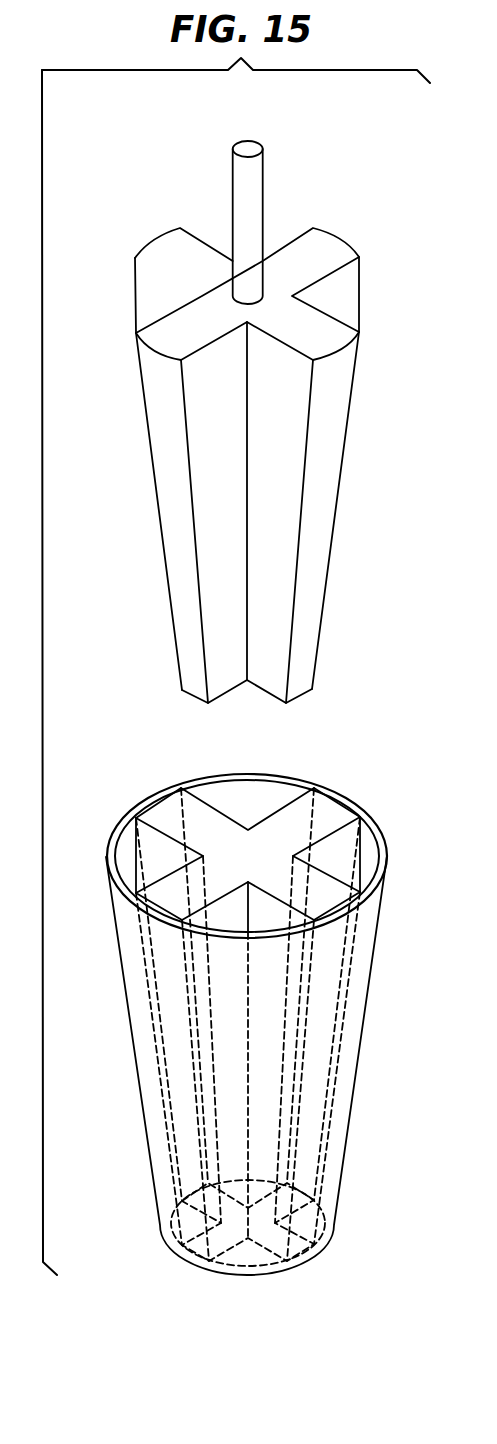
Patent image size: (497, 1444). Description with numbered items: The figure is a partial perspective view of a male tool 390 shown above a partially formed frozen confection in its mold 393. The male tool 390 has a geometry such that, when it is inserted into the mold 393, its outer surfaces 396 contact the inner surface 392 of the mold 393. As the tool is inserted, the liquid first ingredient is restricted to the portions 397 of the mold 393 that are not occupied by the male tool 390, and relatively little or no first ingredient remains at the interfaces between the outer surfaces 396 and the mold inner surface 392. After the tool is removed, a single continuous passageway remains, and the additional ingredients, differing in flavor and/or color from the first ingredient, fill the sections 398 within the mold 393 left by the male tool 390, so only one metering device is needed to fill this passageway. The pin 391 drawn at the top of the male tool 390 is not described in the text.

The male tool 390 is at (350, 402).
The pin 391 is at (250, 196).
The inner surface of the mold 392 is at (386, 863).
The mold 393 is at (355, 1087).
The surfaces of the male tool 396 is at (138, 302).
The portions of the mold not occupied by the male tool 397 is at (252, 797).
The sections within the mold left by the male tool 398 is at (153, 800).